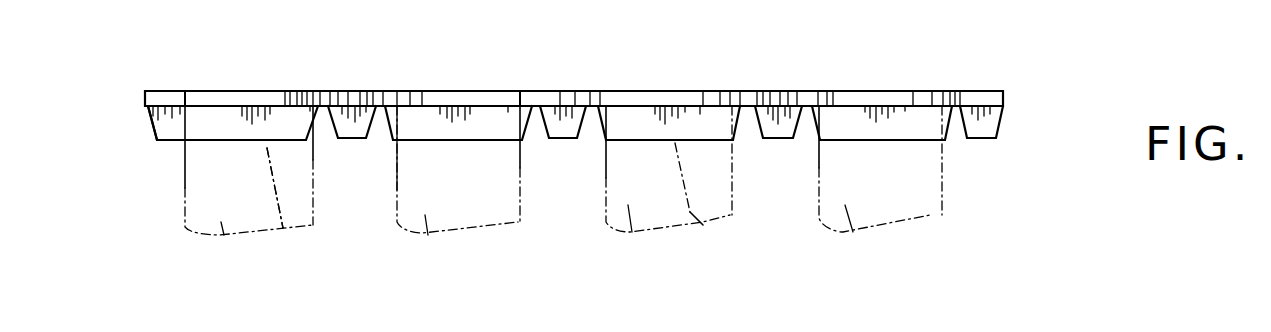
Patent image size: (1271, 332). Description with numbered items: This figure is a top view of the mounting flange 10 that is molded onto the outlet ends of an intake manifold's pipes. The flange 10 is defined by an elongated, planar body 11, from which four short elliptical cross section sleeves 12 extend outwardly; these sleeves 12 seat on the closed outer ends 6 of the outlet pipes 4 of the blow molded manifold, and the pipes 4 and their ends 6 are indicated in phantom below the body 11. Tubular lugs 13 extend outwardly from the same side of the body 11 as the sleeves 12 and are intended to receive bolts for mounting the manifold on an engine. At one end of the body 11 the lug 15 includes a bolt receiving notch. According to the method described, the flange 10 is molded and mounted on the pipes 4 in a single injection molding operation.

The outlet pipes 4 is at (207, 246).
The outer ends 6 is at (500, 206).
The mounting flange 10 is at (577, 89).
The planar body 11 is at (458, 98).
The sleeves 12 is at (200, 135).
The tubular lugs 13 is at (351, 141).
The lug 15 is at (154, 139).